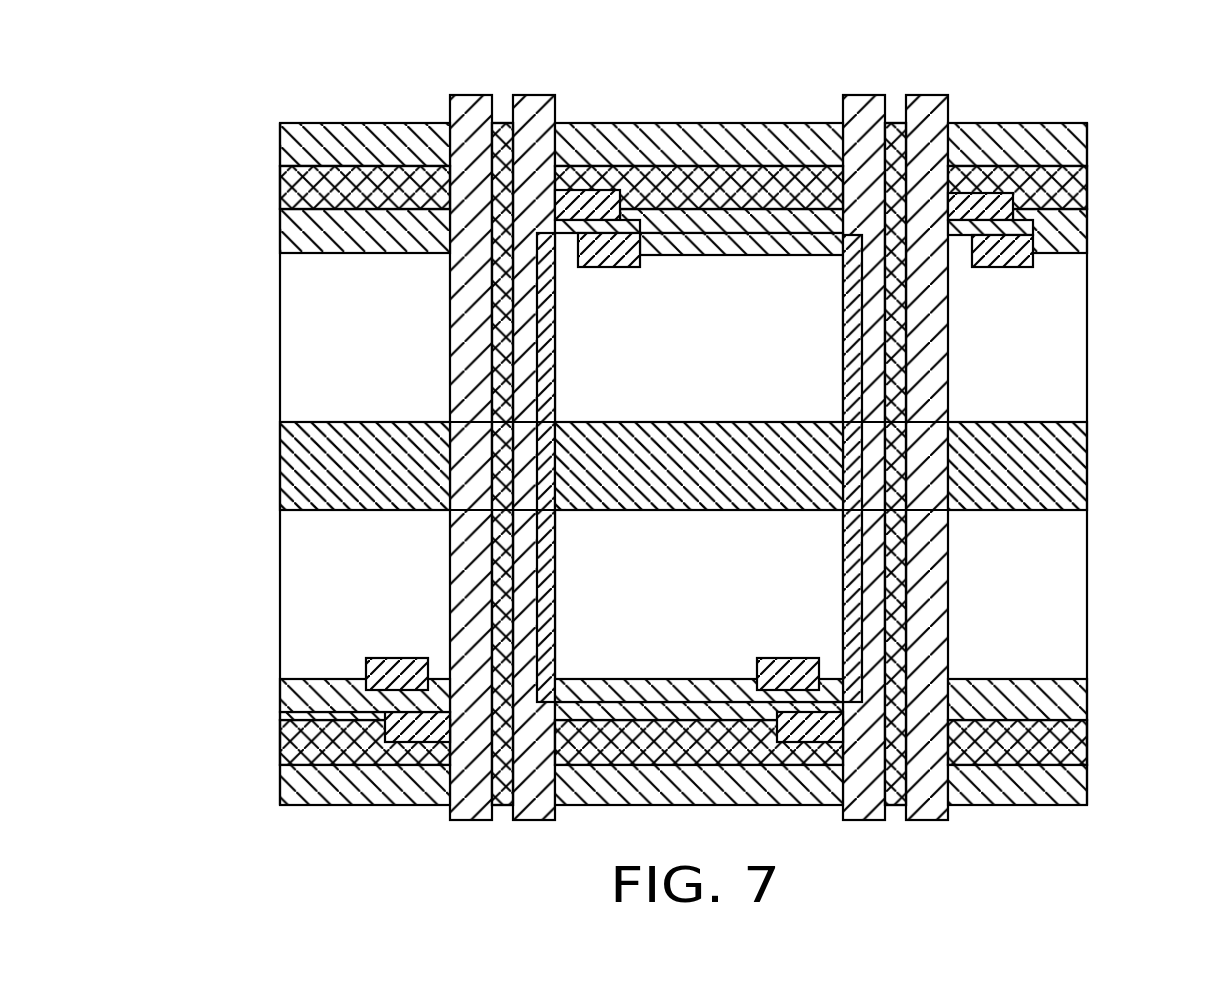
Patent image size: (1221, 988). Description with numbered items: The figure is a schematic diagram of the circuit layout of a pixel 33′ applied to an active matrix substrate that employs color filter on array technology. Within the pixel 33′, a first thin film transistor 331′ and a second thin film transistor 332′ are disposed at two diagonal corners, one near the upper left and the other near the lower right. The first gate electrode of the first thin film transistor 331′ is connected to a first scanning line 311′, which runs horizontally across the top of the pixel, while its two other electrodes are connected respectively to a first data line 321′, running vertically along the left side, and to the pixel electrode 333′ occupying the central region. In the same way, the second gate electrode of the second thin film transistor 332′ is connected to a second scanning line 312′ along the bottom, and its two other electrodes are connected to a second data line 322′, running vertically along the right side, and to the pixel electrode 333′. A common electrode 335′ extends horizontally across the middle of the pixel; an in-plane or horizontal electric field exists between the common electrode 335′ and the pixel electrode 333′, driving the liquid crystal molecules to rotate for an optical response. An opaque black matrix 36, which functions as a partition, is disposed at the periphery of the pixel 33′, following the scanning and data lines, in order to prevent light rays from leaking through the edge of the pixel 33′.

The pixel 33′ is at (754, 104).
The first scanning line 311′ is at (280, 188).
The second scanning line 312′ is at (300, 700).
The first data line 321′ is at (535, 95).
The second data line 322′ is at (866, 820).
The first thin film transistor 331′ is at (630, 238).
The second thin film transistor 332′ is at (775, 679).
The pixel electrode 333′ is at (720, 363).
The common electrode 335′ is at (1037, 428).
The opaque black matrix 36 is at (503, 337).